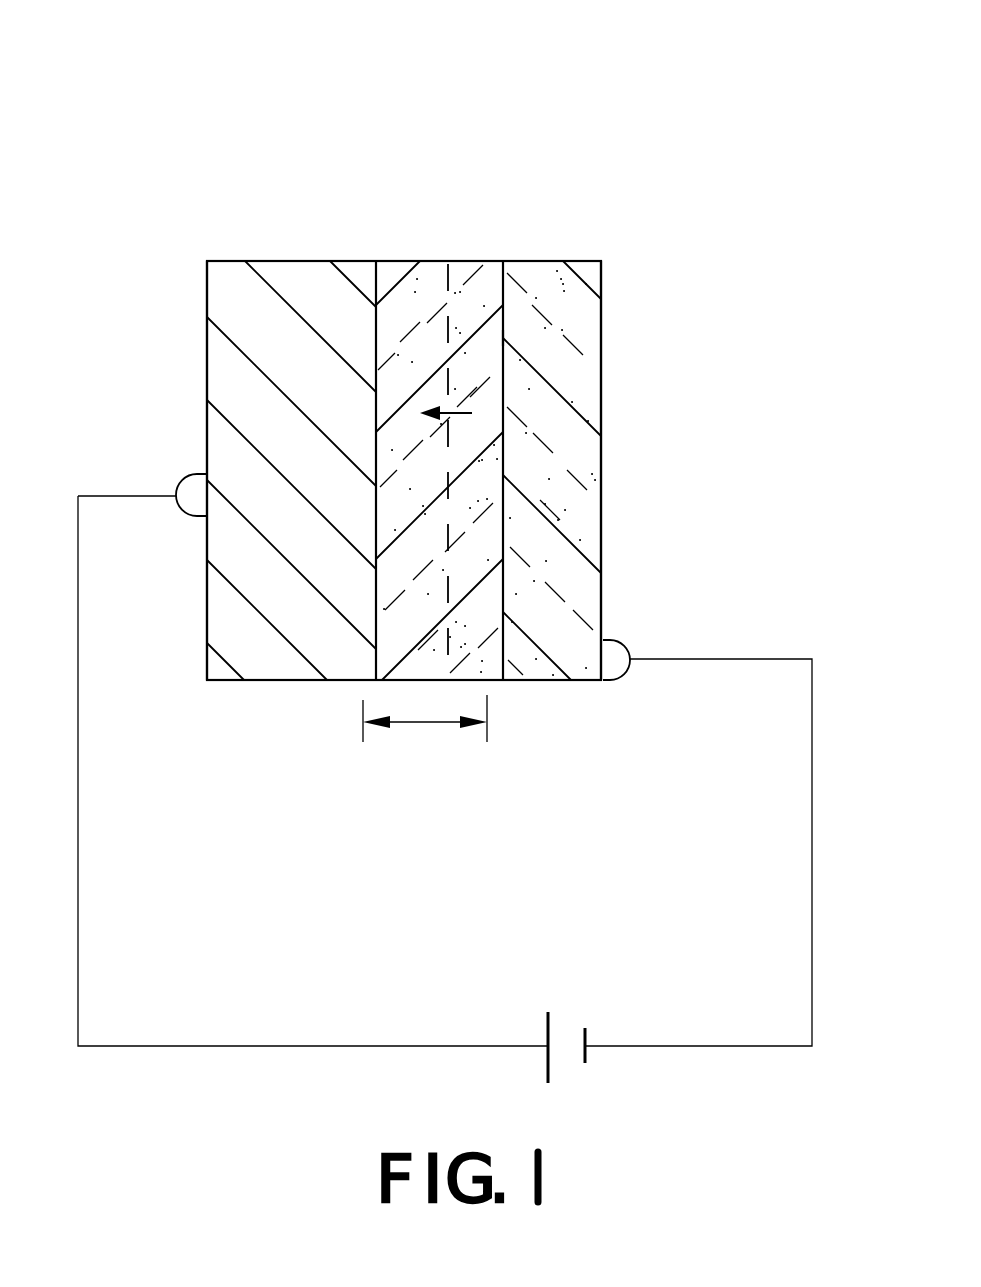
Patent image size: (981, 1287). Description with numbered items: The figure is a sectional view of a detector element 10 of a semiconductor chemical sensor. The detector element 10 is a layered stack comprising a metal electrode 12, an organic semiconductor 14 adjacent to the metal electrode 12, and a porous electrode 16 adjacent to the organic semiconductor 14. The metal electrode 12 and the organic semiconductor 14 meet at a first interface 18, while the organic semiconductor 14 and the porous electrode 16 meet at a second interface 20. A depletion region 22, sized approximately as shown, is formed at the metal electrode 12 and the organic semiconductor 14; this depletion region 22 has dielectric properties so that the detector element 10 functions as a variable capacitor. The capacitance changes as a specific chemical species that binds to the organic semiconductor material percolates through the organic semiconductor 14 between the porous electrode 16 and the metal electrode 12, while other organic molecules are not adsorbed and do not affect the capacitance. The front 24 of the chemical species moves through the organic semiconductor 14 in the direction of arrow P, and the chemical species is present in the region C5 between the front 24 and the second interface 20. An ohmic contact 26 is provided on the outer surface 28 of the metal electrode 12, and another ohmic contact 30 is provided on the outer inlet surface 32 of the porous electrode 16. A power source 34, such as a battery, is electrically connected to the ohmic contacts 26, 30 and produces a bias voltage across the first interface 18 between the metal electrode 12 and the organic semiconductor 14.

The detector element 10 is at (584, 110).
The metal electrode 12 is at (249, 250).
The organic semiconductor 14 is at (401, 250).
The porous electrode 16 is at (628, 503).
The first interface 18 is at (366, 262).
The second interface 20 is at (501, 278).
The depletion region 22 is at (425, 738).
The front 24 is at (458, 262).
The ohmic contact 26 is at (186, 476).
The outer surface 28 is at (207, 307).
The ohmic contact 30 is at (623, 641).
The outer inlet surface 32 is at (603, 406).
The power source 34 is at (560, 1055).
The region C5 is at (503, 338).
The arrow P is at (468, 418).